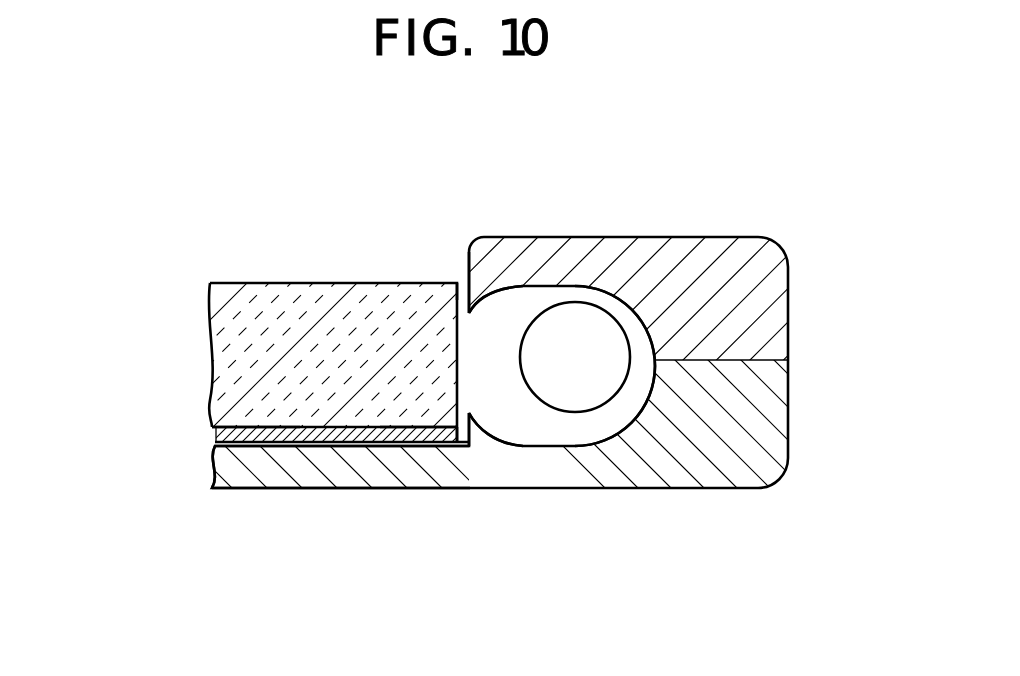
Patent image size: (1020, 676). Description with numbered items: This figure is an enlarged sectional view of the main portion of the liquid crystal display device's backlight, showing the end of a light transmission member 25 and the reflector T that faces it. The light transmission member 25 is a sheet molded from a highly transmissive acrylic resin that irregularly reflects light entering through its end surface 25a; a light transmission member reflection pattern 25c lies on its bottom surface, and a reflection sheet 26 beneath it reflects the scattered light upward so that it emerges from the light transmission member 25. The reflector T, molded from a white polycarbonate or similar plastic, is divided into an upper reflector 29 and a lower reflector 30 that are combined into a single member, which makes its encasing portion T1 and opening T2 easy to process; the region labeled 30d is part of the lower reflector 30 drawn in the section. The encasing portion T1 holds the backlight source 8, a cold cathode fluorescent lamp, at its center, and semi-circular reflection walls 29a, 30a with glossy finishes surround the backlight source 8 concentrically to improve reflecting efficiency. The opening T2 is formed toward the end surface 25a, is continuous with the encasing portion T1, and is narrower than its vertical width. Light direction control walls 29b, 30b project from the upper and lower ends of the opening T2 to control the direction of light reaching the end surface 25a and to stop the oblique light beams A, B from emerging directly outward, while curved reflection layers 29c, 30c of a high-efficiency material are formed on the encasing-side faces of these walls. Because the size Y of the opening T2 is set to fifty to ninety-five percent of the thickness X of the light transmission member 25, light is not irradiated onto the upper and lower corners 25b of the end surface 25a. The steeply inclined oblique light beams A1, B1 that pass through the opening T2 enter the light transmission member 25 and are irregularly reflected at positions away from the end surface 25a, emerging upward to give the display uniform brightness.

The backlight source 8 is at (597, 385).
The light transmission member 25 is at (282, 352).
The end surface 25a is at (420, 422).
The upper and lower corners 25b is at (456, 288).
The light transmission member reflection pattern 25c is at (245, 433).
The reflection sheet 26 is at (343, 443).
The upper reflector 29 is at (687, 232).
The reflection wall 29a is at (612, 295).
The light direction control wall 29b is at (476, 298).
The curved reflection layer 29c is at (522, 284).
The lower reflector 30 is at (762, 495).
The reflection wall 30a is at (645, 392).
The light direction control wall 30b is at (486, 441).
The curved reflection layer 30c is at (510, 441).
The lower tool extension 30d is at (300, 470).
The reflector T is at (731, 256).
The encasing portion T1 is at (545, 418).
The opening T2 is at (455, 358).
The thickness of the light transmission member X is at (212, 427).
The size of the opening Y is at (477, 313).
The oblique light beam A is at (490, 309).
The oblique light beam B is at (523, 395).
The oblique light beam A1 is at (517, 348).
The oblique light beam B1 is at (517, 363).